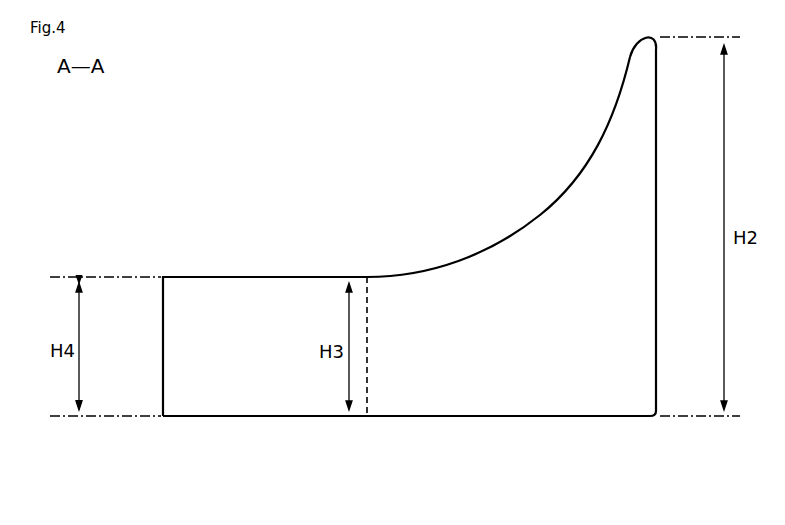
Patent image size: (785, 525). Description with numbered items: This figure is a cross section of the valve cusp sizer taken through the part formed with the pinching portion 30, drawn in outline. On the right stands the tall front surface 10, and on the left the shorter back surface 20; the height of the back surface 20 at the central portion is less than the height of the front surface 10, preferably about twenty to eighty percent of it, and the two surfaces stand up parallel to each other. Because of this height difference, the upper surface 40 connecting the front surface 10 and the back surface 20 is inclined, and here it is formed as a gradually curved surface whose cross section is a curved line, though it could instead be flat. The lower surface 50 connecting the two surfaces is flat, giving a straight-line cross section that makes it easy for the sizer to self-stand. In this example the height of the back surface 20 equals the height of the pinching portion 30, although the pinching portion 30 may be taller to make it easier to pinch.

The front surface 10 is at (657, 138).
The back surface 20 is at (367, 330).
The pinching portion 30 is at (182, 335).
The upper surface 40 is at (527, 227).
The lower surface 50 is at (532, 417).